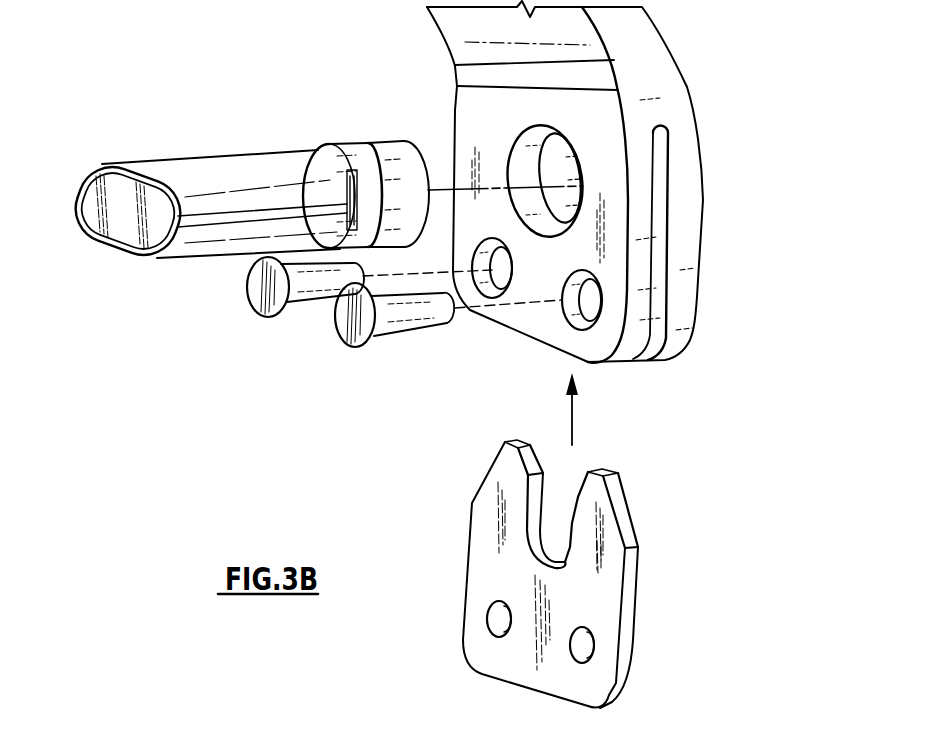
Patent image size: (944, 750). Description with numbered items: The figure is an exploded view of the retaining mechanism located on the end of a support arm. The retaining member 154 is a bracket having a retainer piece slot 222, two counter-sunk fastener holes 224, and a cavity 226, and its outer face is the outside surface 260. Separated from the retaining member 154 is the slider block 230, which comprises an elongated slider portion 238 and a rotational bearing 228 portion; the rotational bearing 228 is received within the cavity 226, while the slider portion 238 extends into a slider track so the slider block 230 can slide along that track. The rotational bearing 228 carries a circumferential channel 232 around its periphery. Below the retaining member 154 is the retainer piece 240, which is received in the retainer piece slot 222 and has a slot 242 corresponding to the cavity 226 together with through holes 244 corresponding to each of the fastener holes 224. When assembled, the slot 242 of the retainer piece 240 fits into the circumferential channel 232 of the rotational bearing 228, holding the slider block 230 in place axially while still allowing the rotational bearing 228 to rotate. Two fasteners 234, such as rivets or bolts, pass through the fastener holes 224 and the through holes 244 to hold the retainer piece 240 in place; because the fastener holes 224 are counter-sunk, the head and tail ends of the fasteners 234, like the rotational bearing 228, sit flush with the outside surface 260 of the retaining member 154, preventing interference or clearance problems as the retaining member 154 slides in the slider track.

The retaining member 154 is at (593, 222).
The retainer piece slot 222 is at (668, 215).
The fastener holes 224 is at (578, 306).
The cavity 226 is at (523, 157).
The rotational bearing 228 is at (340, 150).
The slider block 230 is at (301, 214).
The circumferential channel 232 is at (367, 128).
The fastener 234 is at (340, 327).
The slider portion 238 is at (237, 161).
The retainer piece 240 is at (562, 572).
The slot 242 is at (555, 518).
The through holes 244 is at (488, 617).
The outside surface 260 is at (697, 287).